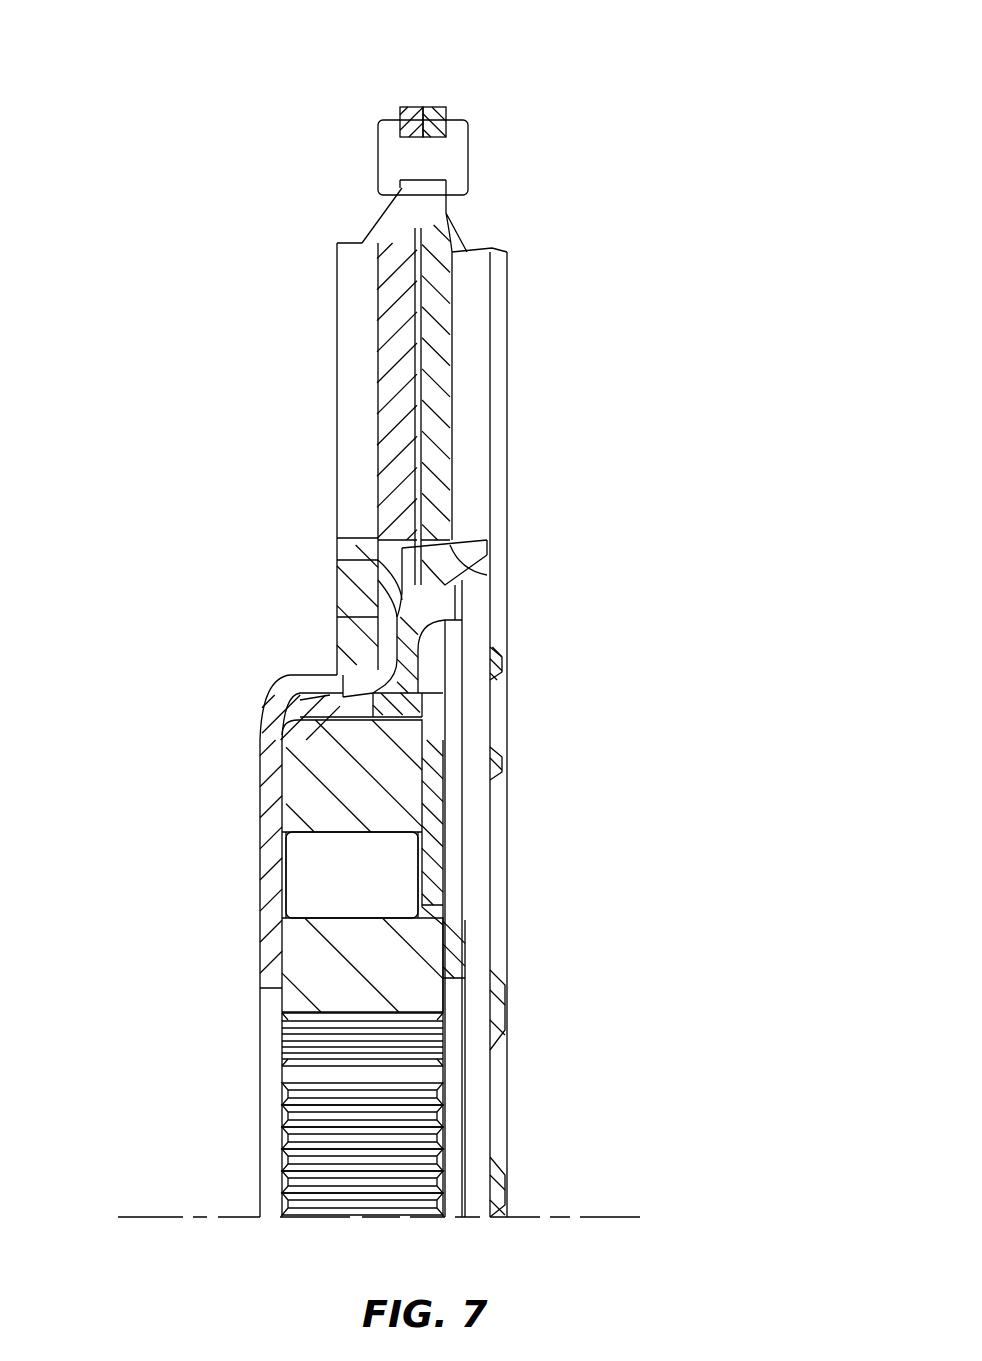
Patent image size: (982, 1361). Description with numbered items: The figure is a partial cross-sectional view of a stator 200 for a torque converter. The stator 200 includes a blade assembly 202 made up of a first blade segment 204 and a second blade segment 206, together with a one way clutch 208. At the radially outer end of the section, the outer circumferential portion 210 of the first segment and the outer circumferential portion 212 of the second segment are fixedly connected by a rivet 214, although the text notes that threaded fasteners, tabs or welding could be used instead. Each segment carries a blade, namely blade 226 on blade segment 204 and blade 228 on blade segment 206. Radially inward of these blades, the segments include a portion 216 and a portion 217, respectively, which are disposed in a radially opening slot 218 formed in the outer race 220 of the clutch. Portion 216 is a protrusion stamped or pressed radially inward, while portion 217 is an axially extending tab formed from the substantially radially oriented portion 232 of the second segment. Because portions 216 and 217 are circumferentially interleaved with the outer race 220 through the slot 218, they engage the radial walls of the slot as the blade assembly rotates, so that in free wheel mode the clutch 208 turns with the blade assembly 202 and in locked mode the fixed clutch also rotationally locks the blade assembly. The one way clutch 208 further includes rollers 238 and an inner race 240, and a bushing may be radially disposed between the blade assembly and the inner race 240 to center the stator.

The stator 200 is at (700, 156).
The blade assembly 202 is at (282, 346).
The blade segment 204 is at (334, 242).
The blade segment 206 is at (509, 250).
The one way clutch 208 is at (190, 1045).
The outer circumferential portion 210 is at (410, 107).
The outer circumferential portion 212 is at (435, 107).
The rivet 214 is at (378, 155).
The portion 216 is at (313, 692).
The portion 217 is at (397, 703).
The radially opening slot 218 is at (363, 703).
The outer race 220 is at (280, 767).
The blade 226 is at (337, 432).
The blade 228 is at (510, 358).
The radially oriented portion 232 is at (437, 803).
The roller 238 is at (380, 865).
The inner race 240 is at (420, 957).